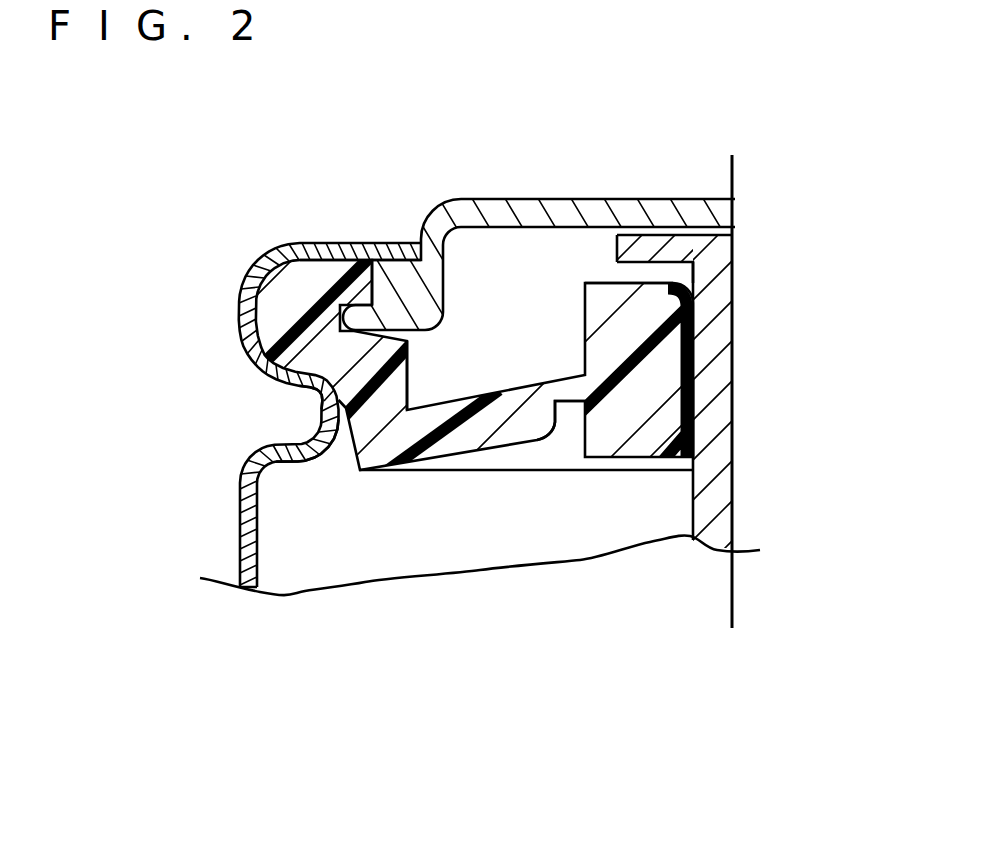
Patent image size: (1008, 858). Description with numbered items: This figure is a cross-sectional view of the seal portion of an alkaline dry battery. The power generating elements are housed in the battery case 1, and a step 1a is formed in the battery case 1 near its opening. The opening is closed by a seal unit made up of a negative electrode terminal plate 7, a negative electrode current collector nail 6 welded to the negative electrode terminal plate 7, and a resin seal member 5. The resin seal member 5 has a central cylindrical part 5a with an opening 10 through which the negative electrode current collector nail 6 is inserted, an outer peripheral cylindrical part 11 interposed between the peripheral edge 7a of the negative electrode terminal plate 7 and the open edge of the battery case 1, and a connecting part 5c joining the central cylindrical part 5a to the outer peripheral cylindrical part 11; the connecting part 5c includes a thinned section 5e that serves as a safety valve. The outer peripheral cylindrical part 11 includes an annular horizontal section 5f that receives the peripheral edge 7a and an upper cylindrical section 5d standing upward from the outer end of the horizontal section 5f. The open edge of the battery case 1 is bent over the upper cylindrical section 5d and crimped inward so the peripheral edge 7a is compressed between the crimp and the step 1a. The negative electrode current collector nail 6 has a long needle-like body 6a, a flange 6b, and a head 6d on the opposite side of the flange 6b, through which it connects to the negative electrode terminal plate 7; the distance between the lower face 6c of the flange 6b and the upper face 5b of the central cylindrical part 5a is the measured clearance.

The battery case 1 is at (238, 537).
The step 1a is at (275, 401).
The resin seal member 5 is at (462, 495).
The central cylindrical part 5a is at (650, 440).
The upper face 5b is at (585, 280).
The connecting part 5c is at (482, 452).
The upper cylindrical section 5d is at (292, 316).
The thinned section 5e is at (573, 390).
The horizontal section 5f is at (410, 380).
The negative electrode current collector nail 6 is at (752, 279).
The body 6a is at (707, 347).
The flange 6b is at (638, 240).
The lower face 6c is at (608, 268).
The head 6d is at (733, 215).
The negative electrode terminal plate 7 is at (699, 200).
The peripheral edge 7a is at (388, 306).
The opening 10 is at (693, 403).
The outer peripheral cylindrical part 11 is at (331, 492).